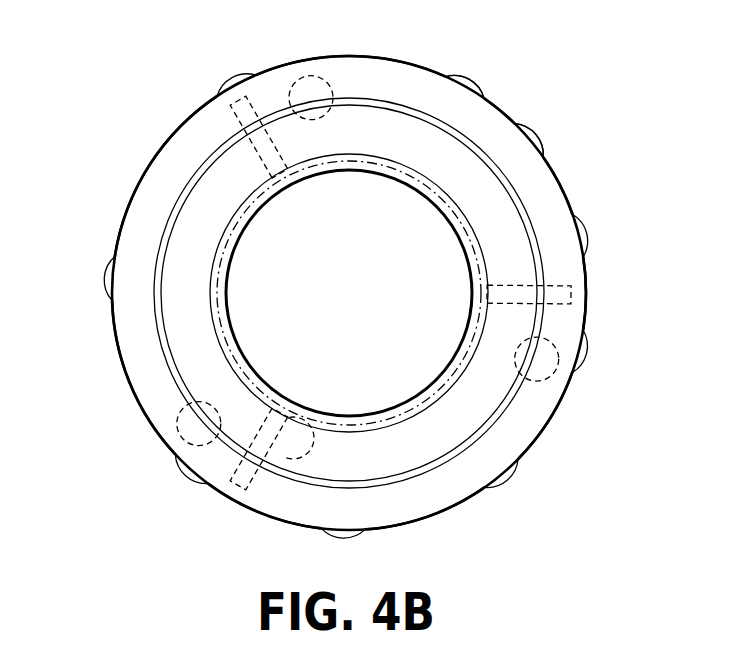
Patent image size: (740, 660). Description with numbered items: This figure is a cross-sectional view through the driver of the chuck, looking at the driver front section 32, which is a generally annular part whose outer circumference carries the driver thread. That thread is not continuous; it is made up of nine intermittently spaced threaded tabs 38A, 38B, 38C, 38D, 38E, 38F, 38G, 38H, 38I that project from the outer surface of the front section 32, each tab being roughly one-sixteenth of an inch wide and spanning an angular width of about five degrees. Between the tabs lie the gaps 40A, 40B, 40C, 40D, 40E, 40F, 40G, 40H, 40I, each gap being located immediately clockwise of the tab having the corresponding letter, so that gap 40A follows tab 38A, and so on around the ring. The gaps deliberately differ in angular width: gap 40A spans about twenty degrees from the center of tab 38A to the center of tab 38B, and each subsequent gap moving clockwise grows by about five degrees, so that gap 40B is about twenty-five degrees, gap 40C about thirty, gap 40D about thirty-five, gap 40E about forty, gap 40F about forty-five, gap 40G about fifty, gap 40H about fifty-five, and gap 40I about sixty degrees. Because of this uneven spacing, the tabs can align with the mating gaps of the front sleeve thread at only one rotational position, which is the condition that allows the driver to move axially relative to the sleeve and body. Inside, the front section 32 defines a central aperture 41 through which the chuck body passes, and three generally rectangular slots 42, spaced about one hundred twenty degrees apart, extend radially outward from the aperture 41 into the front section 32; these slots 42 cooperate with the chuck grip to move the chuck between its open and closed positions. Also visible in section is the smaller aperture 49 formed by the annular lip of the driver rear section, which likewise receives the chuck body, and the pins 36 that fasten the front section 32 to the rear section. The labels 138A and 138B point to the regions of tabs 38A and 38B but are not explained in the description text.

The front section 32 is at (562, 186).
The pins 36 is at (538, 382).
The threaded tab 38A is at (465, 76).
The threaded tab 38B is at (544, 150).
The threaded tab 38C is at (590, 234).
The threaded tab 38D is at (588, 352).
The threaded tab 38E is at (508, 482).
The threaded tab 38F is at (357, 538).
The threaded tab 38G is at (190, 485).
The threaded tab 38H is at (104, 286).
The threaded tab 38I is at (238, 74).
The gap 40A is at (500, 109).
The gap 40B is at (567, 201).
The gap 40C is at (586, 291).
The gap 40D is at (556, 408).
The gap 40E is at (440, 512).
The gap 40F is at (284, 521).
The gap 40G is at (156, 430).
The gap 40H is at (129, 204).
The gap 40I is at (407, 62).
The aperture 41 is at (212, 307).
The slot 42 is at (306, 424).
The aperture 49 is at (246, 227).
The tab 138A is at (483, 85).
The tab 138B is at (537, 129).